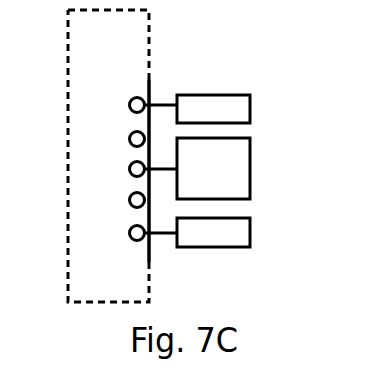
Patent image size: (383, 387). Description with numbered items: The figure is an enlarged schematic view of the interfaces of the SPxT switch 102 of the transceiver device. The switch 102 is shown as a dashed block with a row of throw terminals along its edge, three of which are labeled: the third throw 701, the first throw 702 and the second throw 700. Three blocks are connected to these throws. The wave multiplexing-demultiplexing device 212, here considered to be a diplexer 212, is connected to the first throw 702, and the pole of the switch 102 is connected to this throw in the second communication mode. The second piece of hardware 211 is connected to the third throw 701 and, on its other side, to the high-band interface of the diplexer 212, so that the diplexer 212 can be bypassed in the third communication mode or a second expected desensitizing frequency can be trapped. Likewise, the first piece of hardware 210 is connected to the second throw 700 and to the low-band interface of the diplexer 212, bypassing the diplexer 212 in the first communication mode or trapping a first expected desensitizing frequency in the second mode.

The SPxT switch 102 is at (98, 40).
The third throw 701 is at (129, 107).
The first throw 702 is at (129, 171).
The second throw 700 is at (129, 235).
The second piece of hardware 211 is at (250, 105).
The wave multiplexing-demultiplexing device 212 is at (250, 168).
The first piece of hardware 210 is at (250, 232).